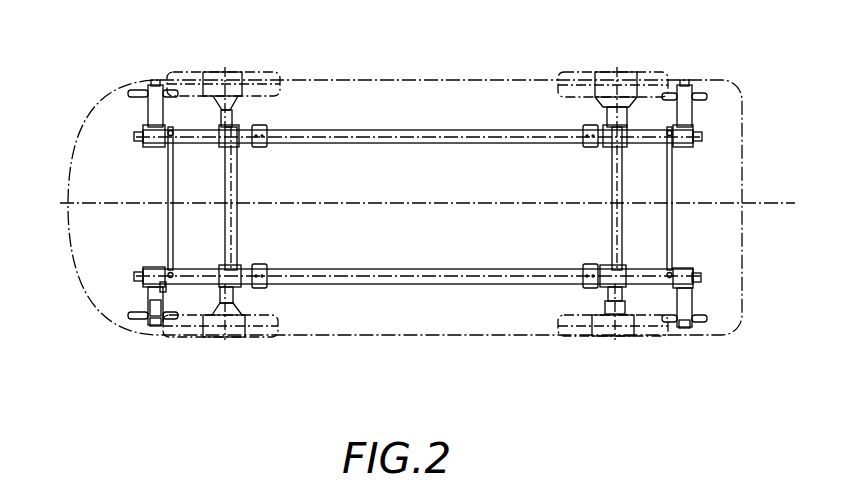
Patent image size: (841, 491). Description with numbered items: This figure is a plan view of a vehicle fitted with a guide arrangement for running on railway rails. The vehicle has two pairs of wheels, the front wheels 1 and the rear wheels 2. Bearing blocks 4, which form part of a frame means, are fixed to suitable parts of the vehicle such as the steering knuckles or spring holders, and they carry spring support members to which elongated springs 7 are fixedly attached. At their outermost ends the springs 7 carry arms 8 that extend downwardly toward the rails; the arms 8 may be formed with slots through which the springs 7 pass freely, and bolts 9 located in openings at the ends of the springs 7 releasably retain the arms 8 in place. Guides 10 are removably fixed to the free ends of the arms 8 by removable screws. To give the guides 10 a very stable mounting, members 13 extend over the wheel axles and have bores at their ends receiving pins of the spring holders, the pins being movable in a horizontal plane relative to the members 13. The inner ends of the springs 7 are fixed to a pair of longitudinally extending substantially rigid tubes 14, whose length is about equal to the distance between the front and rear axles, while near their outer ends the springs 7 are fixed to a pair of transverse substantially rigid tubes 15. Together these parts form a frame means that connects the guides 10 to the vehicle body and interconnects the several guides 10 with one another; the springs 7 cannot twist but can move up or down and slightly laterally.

The front wheels 1 is at (427, 102).
The rear wheels 2 is at (415, 169).
The bearing blocks 4 is at (231, 120).
The elongated springs 7 is at (627, 392).
The arms 8 is at (150, 303).
The bolts 9 is at (163, 284).
The guides 10 is at (405, 168).
The members 13 is at (233, 225).
The longitudinally extending rigid tubes 14 is at (318, 392).
The transverse rigid tubes 15 is at (170, 167).